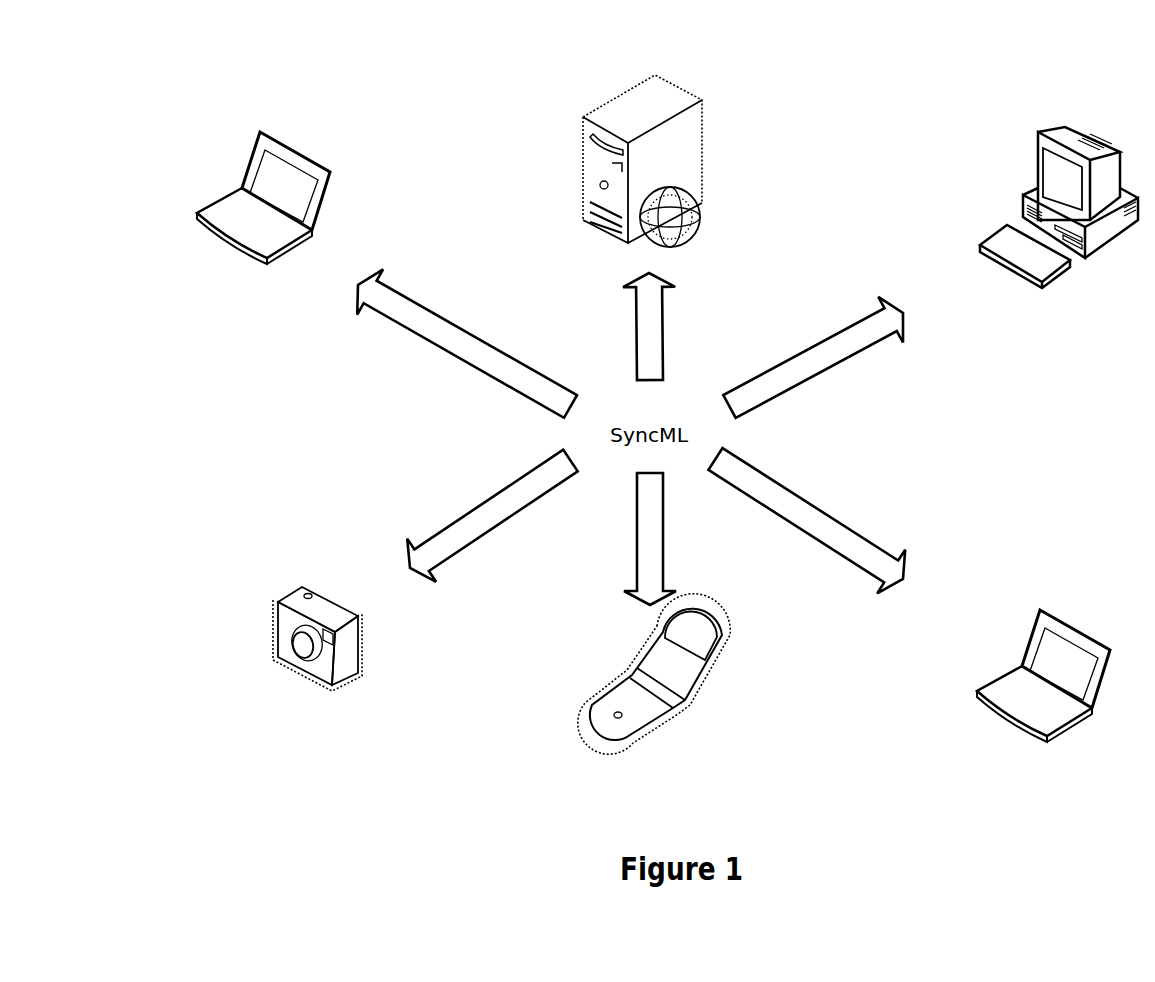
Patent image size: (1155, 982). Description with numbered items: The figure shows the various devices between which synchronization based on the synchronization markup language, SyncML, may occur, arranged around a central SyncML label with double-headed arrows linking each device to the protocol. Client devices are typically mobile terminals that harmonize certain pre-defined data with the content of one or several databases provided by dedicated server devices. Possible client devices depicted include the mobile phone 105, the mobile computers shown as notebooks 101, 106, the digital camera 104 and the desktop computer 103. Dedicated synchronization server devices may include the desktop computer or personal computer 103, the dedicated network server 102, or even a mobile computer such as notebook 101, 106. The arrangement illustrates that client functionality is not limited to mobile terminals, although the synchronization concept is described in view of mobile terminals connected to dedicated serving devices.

The notebook 101 is at (239, 130).
The dedicated network server 102 is at (583, 102).
The desktop computer 103 is at (1033, 142).
The digital camera 104 is at (280, 600).
The mobile phone 105 is at (612, 687).
The notebook 106 is at (988, 685).